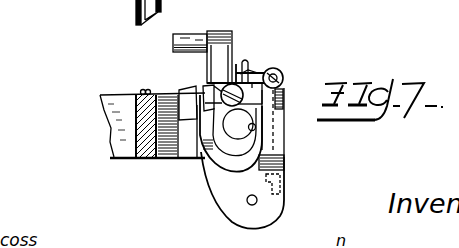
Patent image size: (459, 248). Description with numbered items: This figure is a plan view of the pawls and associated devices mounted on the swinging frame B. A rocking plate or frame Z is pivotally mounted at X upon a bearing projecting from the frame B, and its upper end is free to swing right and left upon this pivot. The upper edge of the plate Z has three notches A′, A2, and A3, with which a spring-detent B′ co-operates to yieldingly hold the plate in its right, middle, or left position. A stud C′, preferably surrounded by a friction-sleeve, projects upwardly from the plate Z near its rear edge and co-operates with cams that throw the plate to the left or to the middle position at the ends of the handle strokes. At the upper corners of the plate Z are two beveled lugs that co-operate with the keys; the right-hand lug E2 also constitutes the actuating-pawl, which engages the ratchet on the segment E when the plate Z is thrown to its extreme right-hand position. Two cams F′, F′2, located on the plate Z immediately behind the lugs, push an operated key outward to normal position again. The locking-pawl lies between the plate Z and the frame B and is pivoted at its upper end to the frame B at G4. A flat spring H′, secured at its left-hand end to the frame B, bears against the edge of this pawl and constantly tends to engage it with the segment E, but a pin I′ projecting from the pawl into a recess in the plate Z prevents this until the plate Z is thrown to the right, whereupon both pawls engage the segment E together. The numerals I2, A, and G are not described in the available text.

The frame B is at (110, 103).
The flat spring H′ is at (150, 90).
The bar I2 is at (175, 42).
The segment E is at (184, 90).
The stud C′ is at (207, 84).
The frame section A is at (137, 158).
The cam F′ is at (186, 158).
The notch A′ is at (192, 85).
The notch A2 is at (238, 76).
The notch A3 is at (262, 76).
The spring-detent B′ is at (242, 78).
The pivot of locking-pawl G4 is at (283, 77).
The lug E2 is at (285, 100).
The cam F′2 is at (285, 146).
The pin I′ is at (252, 134).
The disc G is at (239, 124).
The rocking plate Z is at (228, 200).
The pivot X is at (258, 202).